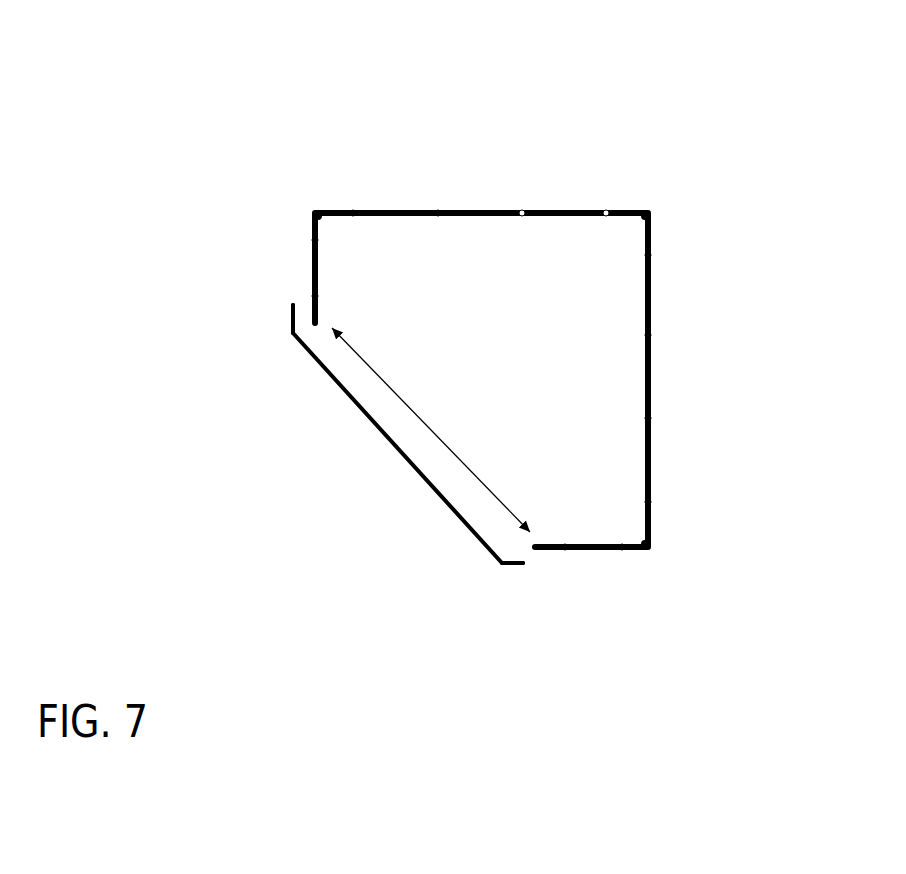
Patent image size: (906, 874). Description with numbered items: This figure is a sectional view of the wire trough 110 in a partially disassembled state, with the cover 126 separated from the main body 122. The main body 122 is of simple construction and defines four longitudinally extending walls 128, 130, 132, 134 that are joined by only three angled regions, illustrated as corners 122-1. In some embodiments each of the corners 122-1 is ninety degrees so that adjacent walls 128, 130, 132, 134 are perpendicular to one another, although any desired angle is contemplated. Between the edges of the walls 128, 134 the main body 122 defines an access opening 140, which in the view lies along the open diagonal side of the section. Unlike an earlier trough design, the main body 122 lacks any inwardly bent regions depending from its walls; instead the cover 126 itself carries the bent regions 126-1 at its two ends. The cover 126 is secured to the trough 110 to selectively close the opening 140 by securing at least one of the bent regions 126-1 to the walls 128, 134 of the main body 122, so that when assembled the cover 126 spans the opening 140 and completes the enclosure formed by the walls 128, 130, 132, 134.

The trough 110 is at (273, 85).
The main body 122 is at (555, 208).
The corners 122-1 is at (320, 220).
The cover 126 is at (378, 440).
The bent regions 126-1 is at (287, 321).
The wall 128 is at (308, 253).
The wall 130 is at (420, 210).
The wall 132 is at (652, 380).
The wall 134 is at (597, 552).
The access opening 140 is at (400, 393).